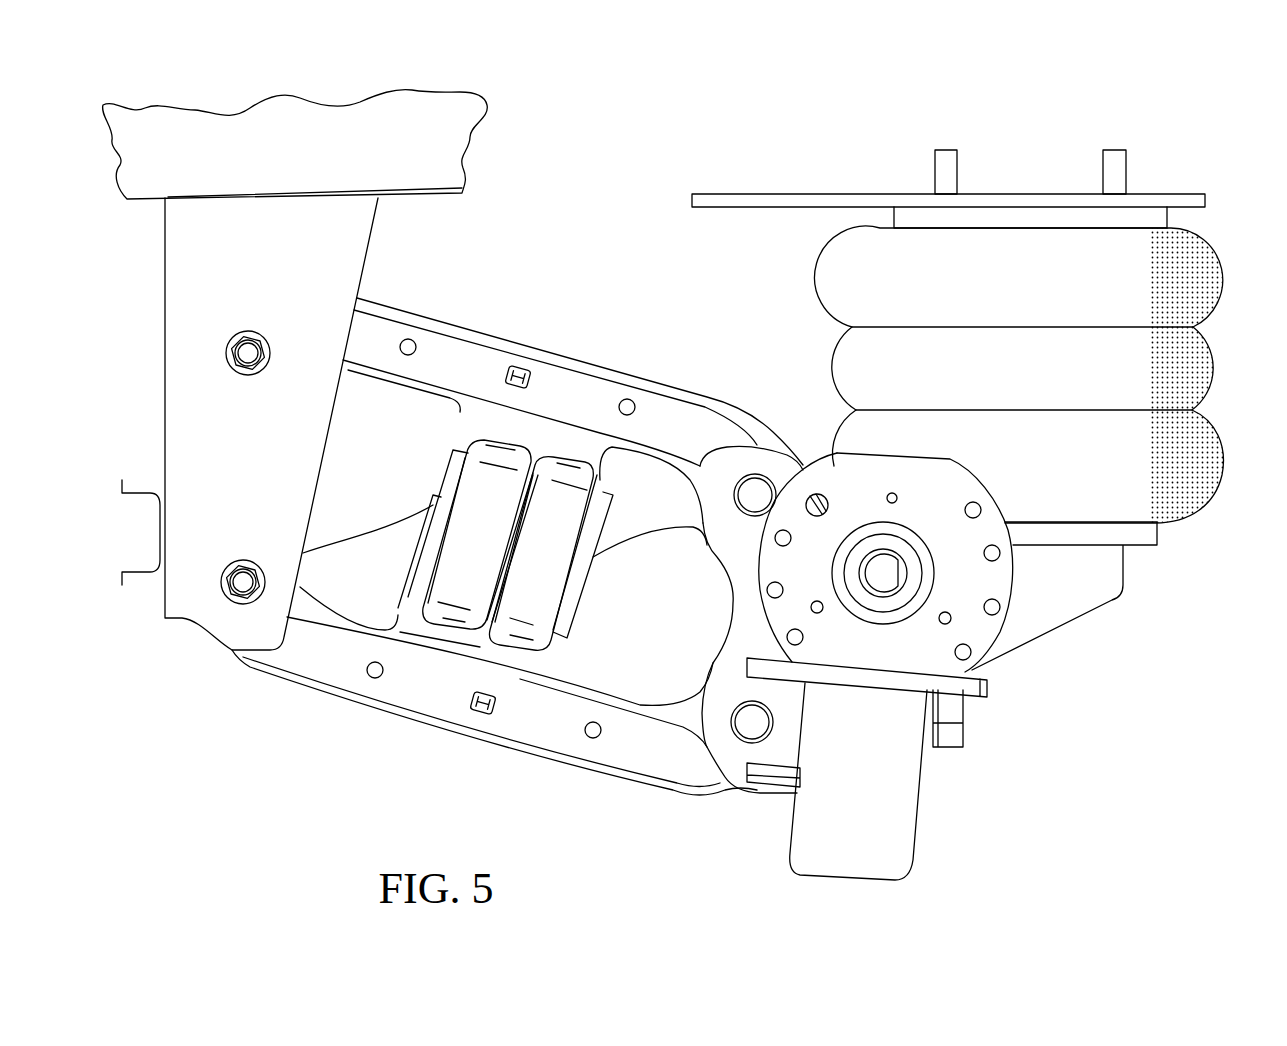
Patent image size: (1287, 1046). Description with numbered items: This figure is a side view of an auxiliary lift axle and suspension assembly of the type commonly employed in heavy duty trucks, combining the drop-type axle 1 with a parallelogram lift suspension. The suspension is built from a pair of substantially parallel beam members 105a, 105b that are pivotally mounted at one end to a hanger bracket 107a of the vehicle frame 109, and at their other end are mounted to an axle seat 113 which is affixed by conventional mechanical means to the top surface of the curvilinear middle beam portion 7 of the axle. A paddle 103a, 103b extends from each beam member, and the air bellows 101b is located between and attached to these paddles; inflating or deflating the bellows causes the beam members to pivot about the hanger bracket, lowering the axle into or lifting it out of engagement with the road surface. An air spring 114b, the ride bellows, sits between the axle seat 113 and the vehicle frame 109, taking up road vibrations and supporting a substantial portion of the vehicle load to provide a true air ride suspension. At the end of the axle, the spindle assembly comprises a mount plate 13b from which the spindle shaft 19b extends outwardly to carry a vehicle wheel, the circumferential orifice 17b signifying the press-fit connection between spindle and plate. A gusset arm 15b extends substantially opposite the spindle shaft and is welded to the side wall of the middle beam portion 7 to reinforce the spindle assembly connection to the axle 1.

The axle 1 is at (936, 861).
The middle beam portion 7 is at (856, 779).
The mount plate 13b is at (977, 630).
The gusset arm 15b is at (1000, 688).
The circumferential orifice 17b is at (903, 530).
The spindle shaft 19b is at (885, 577).
The air bellows 101b is at (447, 603).
The paddle 103a is at (392, 521).
The paddle 103b is at (632, 541).
The beam member 105a is at (462, 348).
The beam member 105b is at (548, 730).
The hanger bracket 107a is at (224, 447).
The vehicle frame 109 is at (282, 163).
The axle seat 113 is at (1052, 588).
The air spring 114b is at (1003, 366).